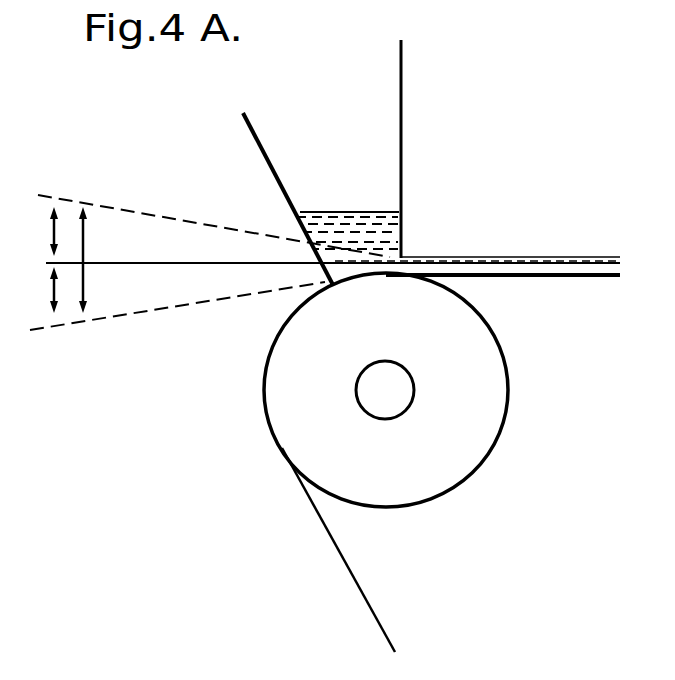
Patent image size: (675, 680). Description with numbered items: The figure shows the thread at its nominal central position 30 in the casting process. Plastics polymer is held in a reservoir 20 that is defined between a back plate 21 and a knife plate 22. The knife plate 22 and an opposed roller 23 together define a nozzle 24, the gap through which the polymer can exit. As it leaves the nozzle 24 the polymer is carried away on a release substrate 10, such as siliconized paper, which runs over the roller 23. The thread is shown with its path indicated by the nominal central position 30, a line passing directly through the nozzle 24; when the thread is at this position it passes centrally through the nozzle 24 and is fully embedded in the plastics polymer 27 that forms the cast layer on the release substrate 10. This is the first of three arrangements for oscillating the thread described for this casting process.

The release substrate 10 is at (358, 583).
The reservoir 20 is at (358, 190).
The back plate 21 is at (266, 160).
The knife plate 22 is at (402, 174).
The roller 23 is at (507, 387).
The nozzle 24 is at (401, 258).
The plastics polymer 27 is at (515, 263).
The nominal central position 30 is at (217, 265).